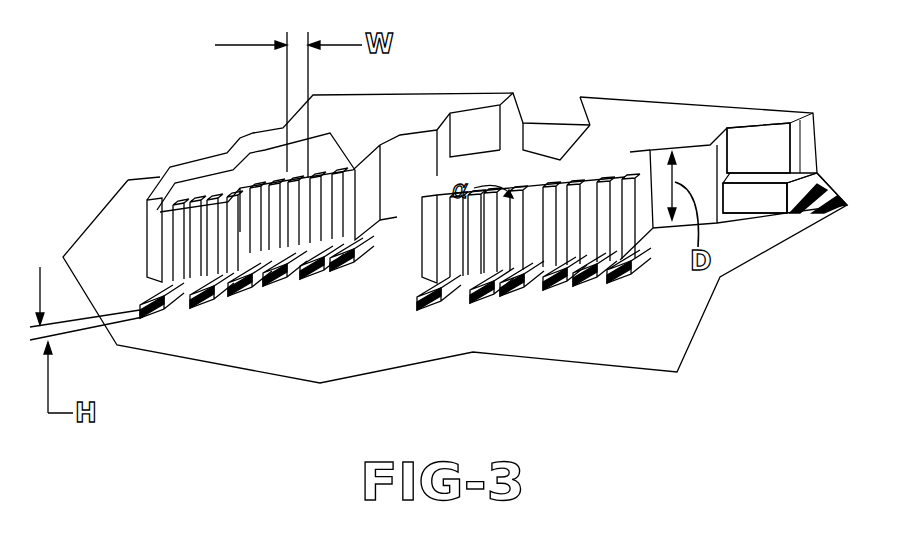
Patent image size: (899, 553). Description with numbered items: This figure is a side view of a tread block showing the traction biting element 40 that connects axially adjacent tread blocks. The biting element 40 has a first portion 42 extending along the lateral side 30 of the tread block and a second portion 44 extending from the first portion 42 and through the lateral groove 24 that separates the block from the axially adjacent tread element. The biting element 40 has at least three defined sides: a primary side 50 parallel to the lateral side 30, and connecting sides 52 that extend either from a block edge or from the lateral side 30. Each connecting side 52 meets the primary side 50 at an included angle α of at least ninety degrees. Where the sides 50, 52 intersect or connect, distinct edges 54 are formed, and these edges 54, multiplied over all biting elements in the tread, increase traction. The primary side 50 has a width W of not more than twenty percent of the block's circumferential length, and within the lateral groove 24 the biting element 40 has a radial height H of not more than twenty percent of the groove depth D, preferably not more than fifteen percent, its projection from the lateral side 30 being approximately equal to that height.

The lateral groove 24 is at (400, 235).
The lateral side 30 is at (607, 220).
The traction biting element 40 is at (160, 295).
The first portion 42 is at (623, 213).
The second portion 44 is at (613, 263).
The primary side 50 is at (503, 240).
The connecting side 52 is at (233, 300).
The edge 54 is at (162, 245).